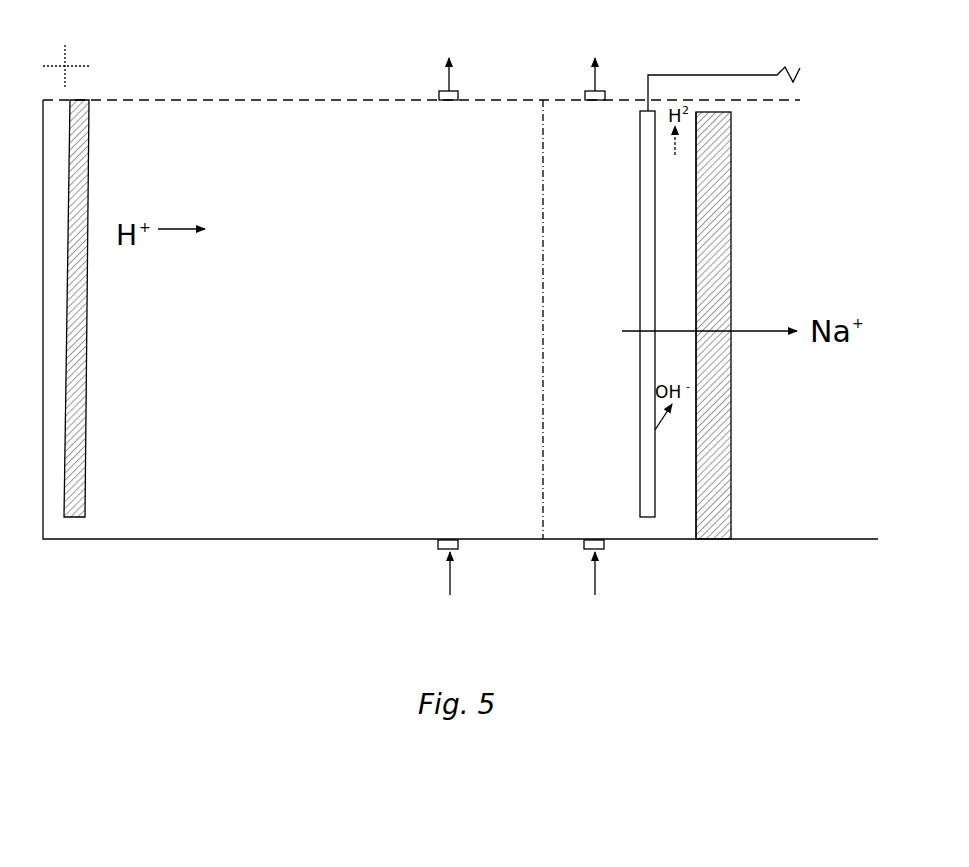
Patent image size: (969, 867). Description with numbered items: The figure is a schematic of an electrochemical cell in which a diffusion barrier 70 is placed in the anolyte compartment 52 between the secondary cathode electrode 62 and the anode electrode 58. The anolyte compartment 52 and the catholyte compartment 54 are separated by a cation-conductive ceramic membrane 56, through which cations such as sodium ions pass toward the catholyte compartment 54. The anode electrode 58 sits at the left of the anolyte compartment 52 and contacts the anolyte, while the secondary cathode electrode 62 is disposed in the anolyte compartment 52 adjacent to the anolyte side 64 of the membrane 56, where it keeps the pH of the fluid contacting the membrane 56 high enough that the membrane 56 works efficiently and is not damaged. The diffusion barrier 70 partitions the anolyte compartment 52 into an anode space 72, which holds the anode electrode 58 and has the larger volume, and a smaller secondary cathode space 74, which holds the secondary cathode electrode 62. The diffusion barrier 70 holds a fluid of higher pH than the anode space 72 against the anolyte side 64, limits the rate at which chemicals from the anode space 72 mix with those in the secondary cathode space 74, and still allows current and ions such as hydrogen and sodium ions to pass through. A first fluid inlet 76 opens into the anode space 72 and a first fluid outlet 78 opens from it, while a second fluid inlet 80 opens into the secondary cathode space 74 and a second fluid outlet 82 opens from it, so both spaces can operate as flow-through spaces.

The anolyte compartment 52 is at (373, 411).
The catholyte compartment 54 is at (813, 410).
The cation-conductive ceramic membrane 56 is at (731, 140).
The anode electrode 58 is at (85, 418).
The secondary cathode electrode 62 is at (640, 372).
The anolyte side of the membrane 64 is at (696, 270).
The diffusion barrier 70 is at (543, 118).
The anode space 72 is at (518, 498).
The secondary cathode space 74 is at (581, 498).
The first fluid inlet 76 is at (458, 543).
The first fluid outlet 78 is at (458, 94).
The second fluid inlet 80 is at (605, 543).
The second fluid outlet 82 is at (605, 94).